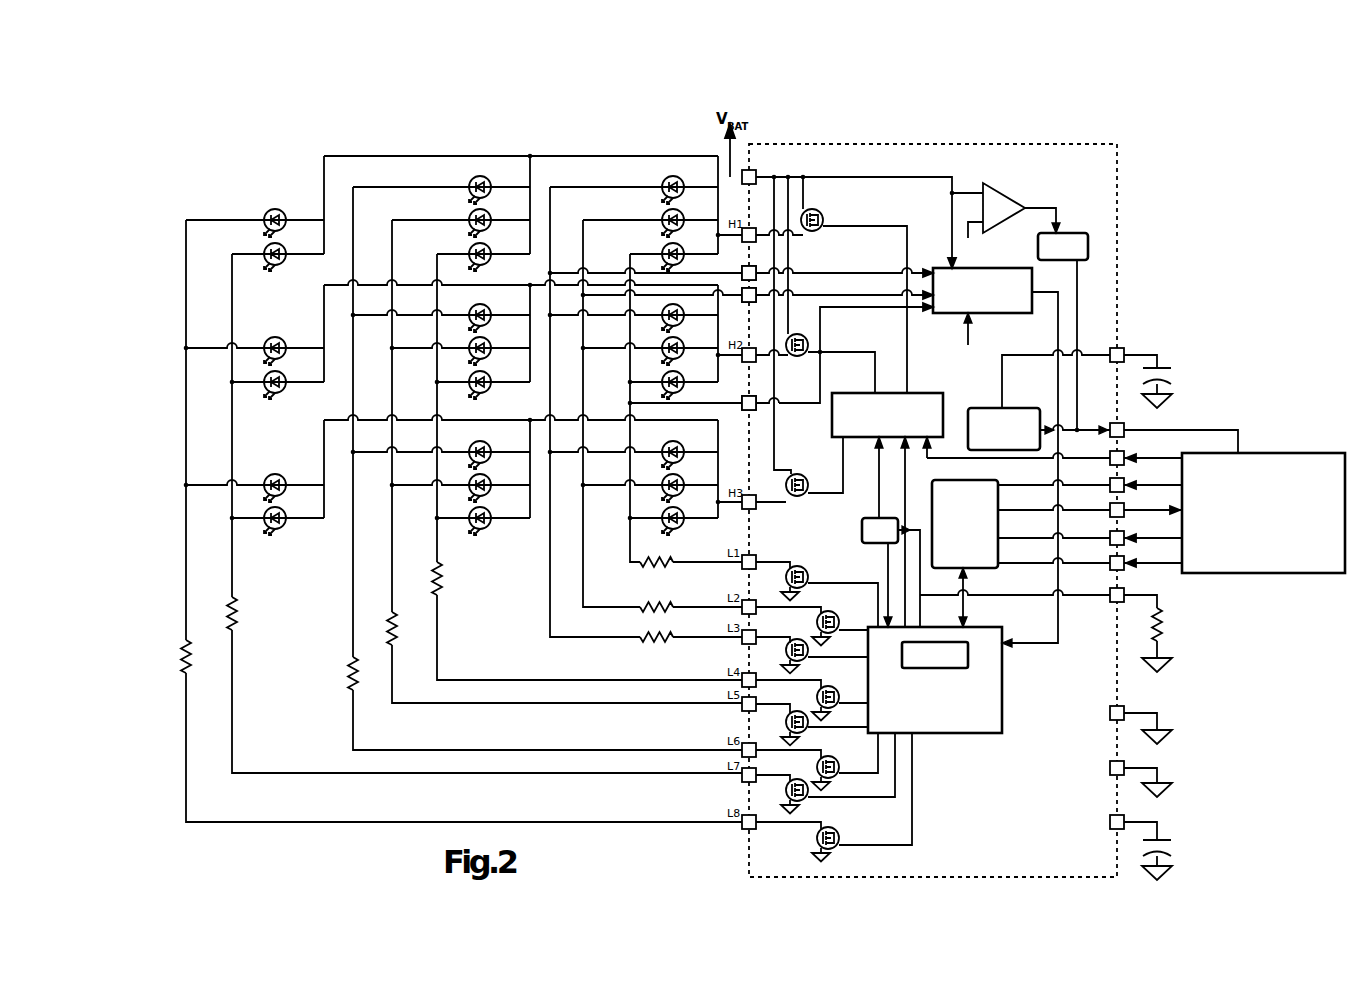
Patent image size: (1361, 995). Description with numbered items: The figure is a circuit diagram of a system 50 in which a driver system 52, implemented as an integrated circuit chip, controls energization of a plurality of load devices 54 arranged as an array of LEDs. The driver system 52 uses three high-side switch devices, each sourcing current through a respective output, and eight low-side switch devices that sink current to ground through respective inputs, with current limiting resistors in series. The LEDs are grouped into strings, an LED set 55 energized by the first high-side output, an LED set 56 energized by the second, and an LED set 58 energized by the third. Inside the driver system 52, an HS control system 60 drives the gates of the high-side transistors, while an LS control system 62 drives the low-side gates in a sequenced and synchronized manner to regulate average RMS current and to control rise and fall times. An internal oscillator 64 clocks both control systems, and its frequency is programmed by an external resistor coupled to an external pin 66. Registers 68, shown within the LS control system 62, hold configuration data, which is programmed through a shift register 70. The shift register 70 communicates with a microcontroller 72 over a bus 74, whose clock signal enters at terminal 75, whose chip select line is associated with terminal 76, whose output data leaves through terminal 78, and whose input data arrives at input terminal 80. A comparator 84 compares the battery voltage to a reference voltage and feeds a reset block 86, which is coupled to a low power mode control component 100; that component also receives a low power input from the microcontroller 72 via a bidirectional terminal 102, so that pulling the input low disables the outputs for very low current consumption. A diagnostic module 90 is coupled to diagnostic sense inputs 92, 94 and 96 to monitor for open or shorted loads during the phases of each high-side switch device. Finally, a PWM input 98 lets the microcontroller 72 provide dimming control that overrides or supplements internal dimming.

The system 50 is at (1058, 132).
The driver system 52 is at (1098, 145).
The load devices 54 is at (340, 140).
The LED set 55 is at (244, 210).
The LED set 56 is at (174, 338).
The LED set 58 is at (174, 468).
The HS control system 60 is at (918, 393).
The LS control system 62 is at (948, 735).
The oscillator 64 is at (862, 531).
The external pin 66 is at (1115, 605).
The registers 68 is at (968, 652).
The shift register 70 is at (965, 480).
The microcontroller 72 is at (1250, 452).
The bus 74 is at (1195, 407).
The terminal 75 is at (1110, 559).
The terminal 76 is at (1110, 479).
The terminal 78 is at (1110, 504).
The input terminal 80 is at (1110, 531).
The comparator 84 is at (1003, 192).
The reset block 86 is at (1090, 246).
The diagnostic module 90 is at (992, 316).
The diagnostic sense input 92 is at (757, 268).
The diagnostic sense input 94 is at (757, 294).
The diagnostic sense input 96 is at (749, 410).
The PWM input 98 is at (1110, 454).
The low power mode control component 100 is at (1028, 408).
The terminal 102 is at (1112, 420).